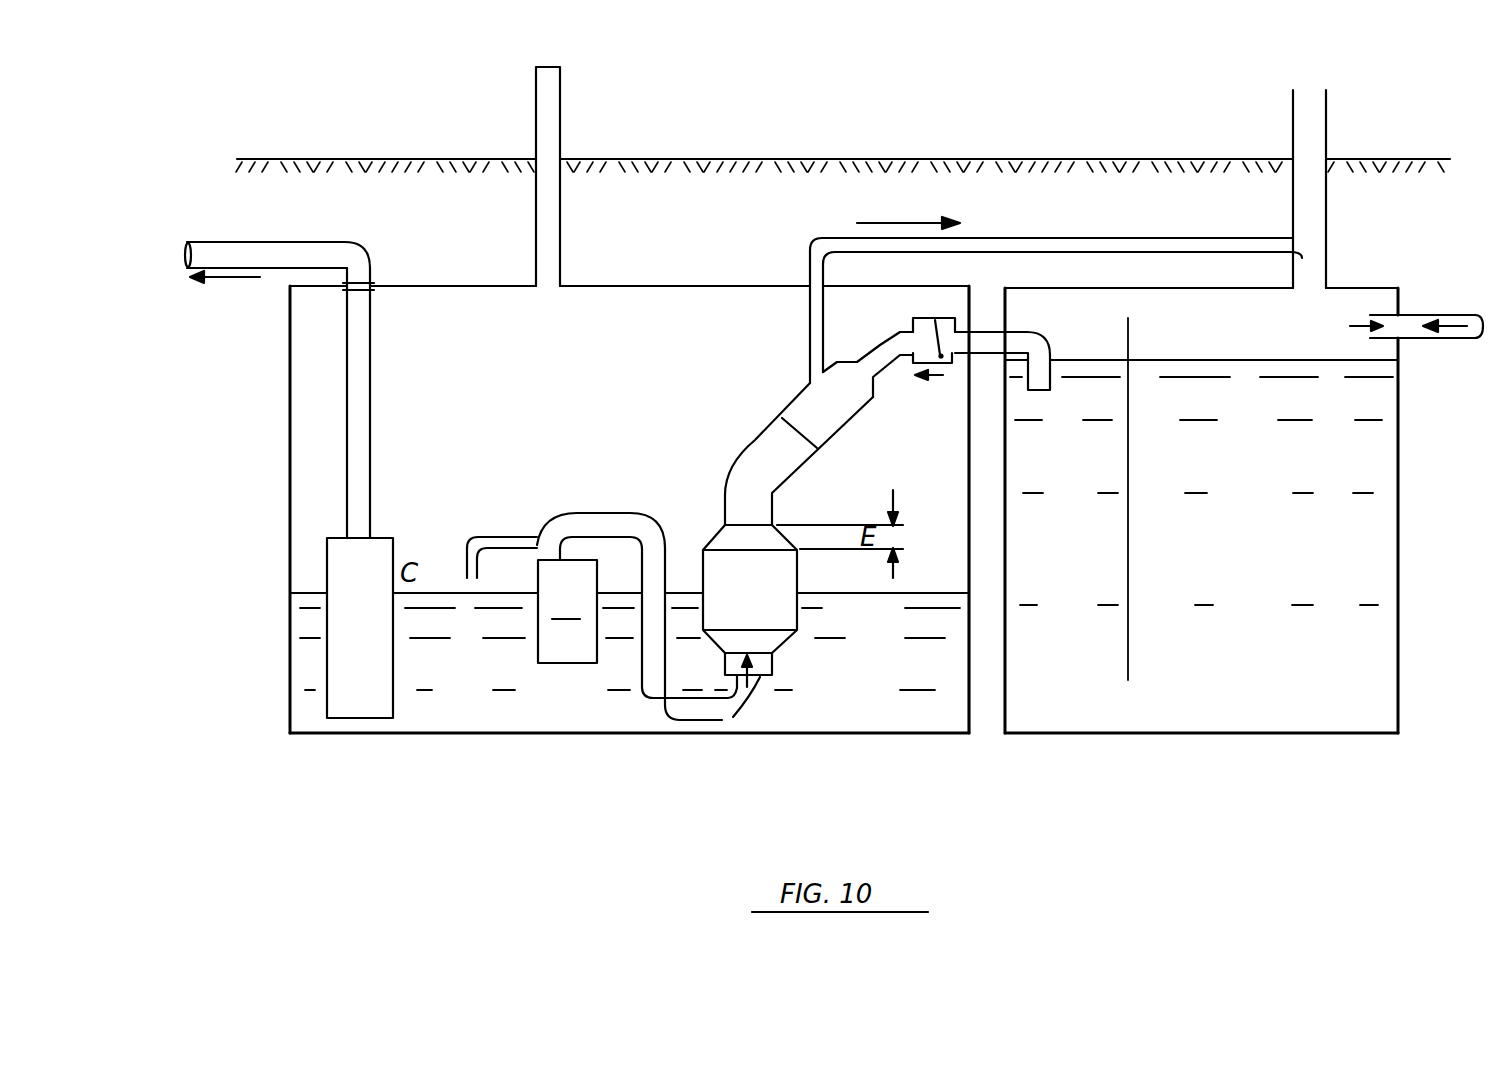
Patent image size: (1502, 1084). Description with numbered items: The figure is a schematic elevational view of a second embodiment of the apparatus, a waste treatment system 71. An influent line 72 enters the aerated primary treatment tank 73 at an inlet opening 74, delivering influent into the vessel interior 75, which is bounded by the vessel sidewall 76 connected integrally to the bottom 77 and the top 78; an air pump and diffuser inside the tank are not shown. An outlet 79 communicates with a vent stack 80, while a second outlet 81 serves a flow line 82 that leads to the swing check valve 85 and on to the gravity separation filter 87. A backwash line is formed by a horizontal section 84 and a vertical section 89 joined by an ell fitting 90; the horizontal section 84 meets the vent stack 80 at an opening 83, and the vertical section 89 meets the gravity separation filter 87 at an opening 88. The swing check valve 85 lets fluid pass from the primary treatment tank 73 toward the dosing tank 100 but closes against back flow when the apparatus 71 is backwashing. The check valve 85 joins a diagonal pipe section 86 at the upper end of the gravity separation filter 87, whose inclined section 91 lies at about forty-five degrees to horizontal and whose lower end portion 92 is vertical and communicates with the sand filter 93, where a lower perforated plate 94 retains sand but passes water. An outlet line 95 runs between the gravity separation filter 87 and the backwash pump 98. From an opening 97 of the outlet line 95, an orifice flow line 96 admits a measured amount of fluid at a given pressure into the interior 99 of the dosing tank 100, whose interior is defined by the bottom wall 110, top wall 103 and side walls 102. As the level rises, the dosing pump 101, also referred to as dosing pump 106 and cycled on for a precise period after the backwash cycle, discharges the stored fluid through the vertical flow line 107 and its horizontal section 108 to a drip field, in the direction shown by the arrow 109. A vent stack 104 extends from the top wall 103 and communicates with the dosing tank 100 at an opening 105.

The waste treatment system 71 is at (903, 125).
The influent line 72 is at (1457, 315).
The aerated primary treatment tank 73 is at (1360, 288).
The inlet opening 74 is at (1350, 326).
The vessel interior 75 is at (1250, 273).
The vessel sidewall 76 is at (1398, 545).
The bottom 77 is at (1180, 735).
The top 78 is at (1157, 288).
The outlet 79 is at (1308, 288).
The vent stack 80 is at (1328, 203).
The outlet 81 is at (1005, 333).
The flow line 82 is at (1048, 360).
The opening 83 is at (1293, 246).
The horizontal section 84 is at (1157, 210).
The swing check valve 85 is at (913, 365).
The diagonal pipe section 86 is at (880, 363).
The gravity separation filter 87 is at (843, 428).
The opening 88 is at (810, 375).
The vertical section 89 is at (810, 312).
The ell fitting 90 is at (820, 240).
The inclined section 91 is at (770, 448).
The lower end portion 92 is at (777, 498).
The sand filter 93 is at (757, 675).
The lower perforated plate 94 is at (735, 677).
The outlet line 95 is at (667, 707).
The flow line 96 is at (495, 533).
The opening 97 is at (537, 543).
The backwash pump 98 is at (567, 611).
The interior 99 is at (578, 362).
The dosing tank 100 is at (290, 562).
The dosing pump 101 is at (327, 575).
The side walls 102 is at (292, 667).
The top wall 103 is at (503, 252).
The vent stack 104 is at (564, 213).
The opening 105 is at (608, 252).
The dosing pump 106 is at (338, 537).
The flow line 107 is at (372, 378).
The horizontal section 108 is at (235, 253).
The arrow 109 is at (258, 284).
The bottom wall 110 is at (455, 735).